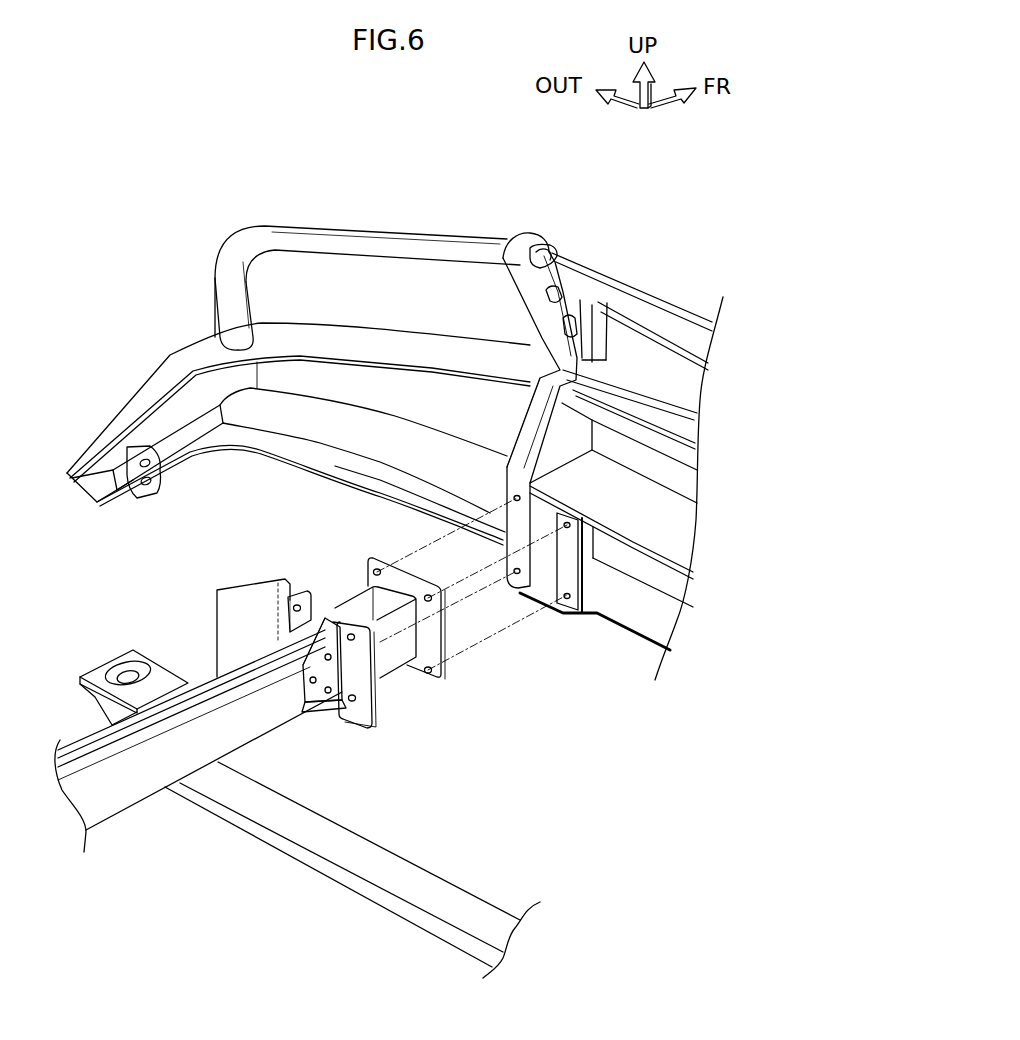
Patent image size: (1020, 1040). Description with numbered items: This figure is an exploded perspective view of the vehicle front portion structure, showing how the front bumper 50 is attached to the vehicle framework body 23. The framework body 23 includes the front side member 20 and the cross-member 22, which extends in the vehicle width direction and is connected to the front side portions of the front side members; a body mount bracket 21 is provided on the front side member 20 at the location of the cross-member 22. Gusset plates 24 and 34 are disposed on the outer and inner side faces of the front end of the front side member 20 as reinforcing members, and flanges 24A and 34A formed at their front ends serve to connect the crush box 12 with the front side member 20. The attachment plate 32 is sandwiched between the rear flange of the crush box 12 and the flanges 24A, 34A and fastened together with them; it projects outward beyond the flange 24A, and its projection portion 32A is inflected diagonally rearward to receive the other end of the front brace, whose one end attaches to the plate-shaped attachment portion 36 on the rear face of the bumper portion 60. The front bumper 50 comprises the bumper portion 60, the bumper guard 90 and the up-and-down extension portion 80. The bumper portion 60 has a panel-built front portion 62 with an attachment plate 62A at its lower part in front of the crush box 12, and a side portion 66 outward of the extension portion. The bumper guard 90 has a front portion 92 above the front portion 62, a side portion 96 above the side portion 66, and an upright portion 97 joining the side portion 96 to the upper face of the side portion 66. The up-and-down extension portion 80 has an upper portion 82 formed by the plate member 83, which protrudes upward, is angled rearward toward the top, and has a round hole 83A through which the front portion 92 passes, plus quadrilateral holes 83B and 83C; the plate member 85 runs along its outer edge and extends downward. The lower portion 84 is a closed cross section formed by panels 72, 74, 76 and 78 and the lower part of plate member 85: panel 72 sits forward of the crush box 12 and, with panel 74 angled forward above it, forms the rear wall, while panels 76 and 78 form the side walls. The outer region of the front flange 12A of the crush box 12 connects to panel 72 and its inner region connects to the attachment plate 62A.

The crush box 12 is at (424, 640).
The front flange 12A is at (447, 664).
The front side member 20 is at (192, 738).
The body mount bracket 21 is at (106, 664).
The cross-member 22 is at (437, 871).
The framework body 23 is at (80, 746).
The gusset plate 24 is at (284, 587).
The flange 24A is at (292, 616).
The attachment plate 32 is at (380, 727).
The projection portion 32A is at (230, 635).
The gusset plate 34 is at (334, 700).
The flange 34A is at (355, 708).
The attachment portion 36 is at (134, 478).
The front bumper 50 is at (322, 349).
The bumper portion 60 is at (298, 360).
The front portion 62 is at (621, 496).
The attachment plate 62A is at (573, 582).
The side portion 66 is at (188, 348).
The panel 72 is at (525, 567).
The panel 74 is at (573, 494).
The panel 76 is at (566, 447).
The panel 78 is at (512, 430).
The up-and-down extension portion 80 is at (502, 351).
The upper portion 82 is at (523, 347).
The plate member 83 is at (606, 268).
The round hole 83A is at (547, 248).
The hole 83B is at (560, 292).
The hole 83C is at (578, 326).
The lower portion 84 is at (493, 572).
The plate member 85 is at (563, 256).
The bumper guard 90 is at (343, 247).
The front portion 92 is at (663, 305).
The side portion 96 is at (323, 224).
The upright portion 97 is at (215, 299).